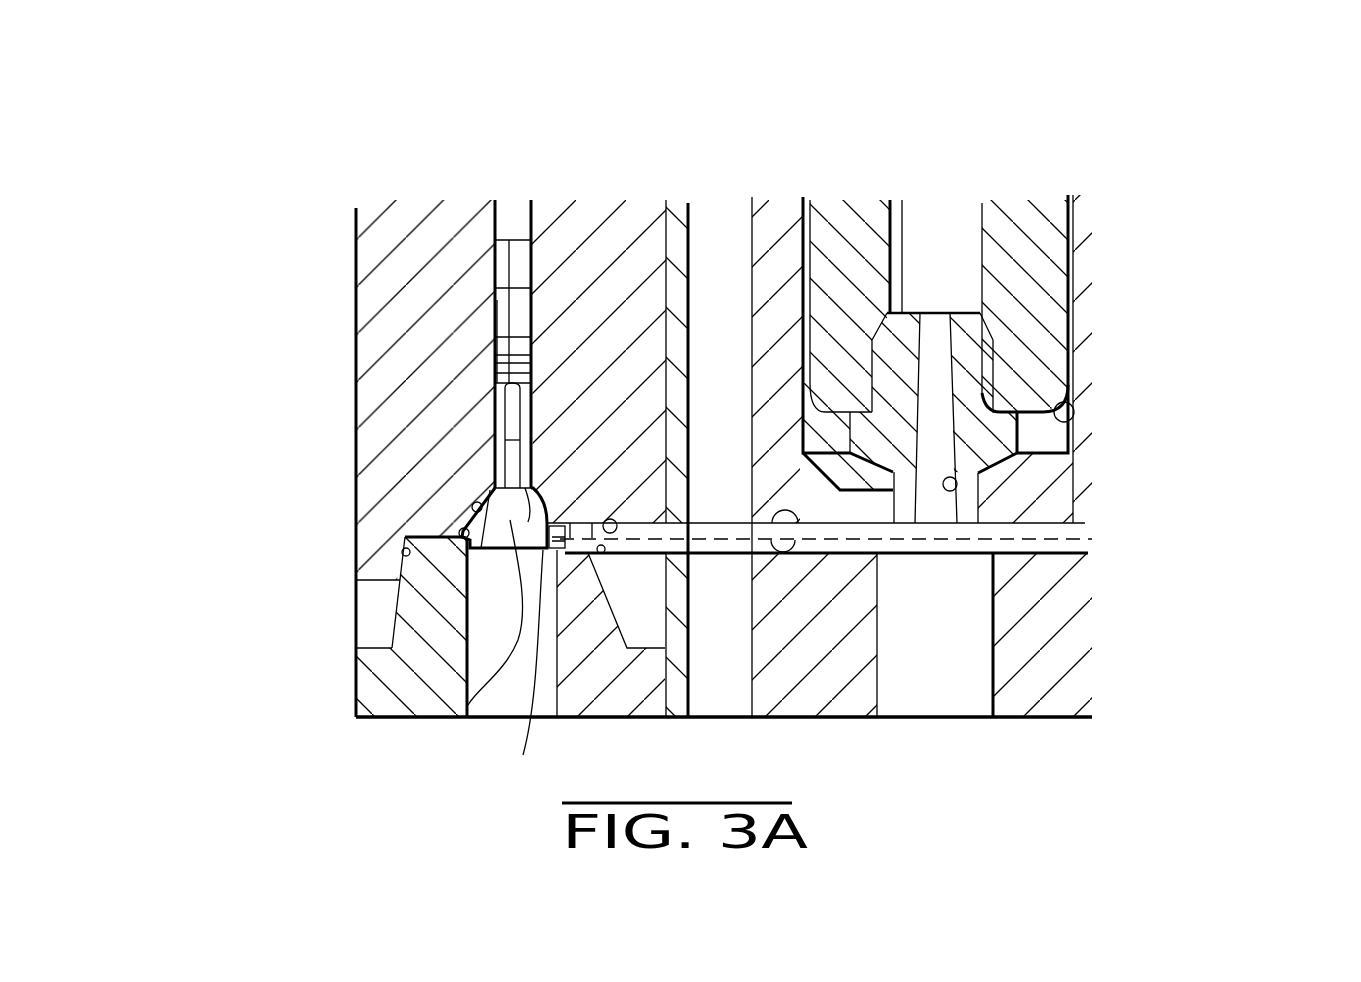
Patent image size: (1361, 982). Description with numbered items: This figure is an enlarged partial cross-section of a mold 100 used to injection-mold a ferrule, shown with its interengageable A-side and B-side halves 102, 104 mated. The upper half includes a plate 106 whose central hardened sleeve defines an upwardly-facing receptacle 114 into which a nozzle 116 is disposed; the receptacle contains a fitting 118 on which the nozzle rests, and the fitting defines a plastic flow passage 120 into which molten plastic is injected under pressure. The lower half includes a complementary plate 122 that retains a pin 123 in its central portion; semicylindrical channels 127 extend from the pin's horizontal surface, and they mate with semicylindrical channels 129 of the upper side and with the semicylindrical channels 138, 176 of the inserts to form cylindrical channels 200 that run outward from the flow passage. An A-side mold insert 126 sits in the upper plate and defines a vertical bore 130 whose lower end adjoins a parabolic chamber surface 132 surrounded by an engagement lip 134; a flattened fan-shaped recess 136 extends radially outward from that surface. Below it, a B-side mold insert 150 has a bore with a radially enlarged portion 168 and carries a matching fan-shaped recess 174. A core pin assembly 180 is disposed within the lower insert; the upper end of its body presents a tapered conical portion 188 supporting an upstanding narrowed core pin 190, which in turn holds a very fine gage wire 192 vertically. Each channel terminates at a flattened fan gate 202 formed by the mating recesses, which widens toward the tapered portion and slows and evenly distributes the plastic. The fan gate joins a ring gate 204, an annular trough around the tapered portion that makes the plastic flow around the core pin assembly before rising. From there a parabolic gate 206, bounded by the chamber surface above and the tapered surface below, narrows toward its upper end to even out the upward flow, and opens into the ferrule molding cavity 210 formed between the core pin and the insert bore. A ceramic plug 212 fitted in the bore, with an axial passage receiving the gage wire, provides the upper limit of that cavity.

The mold 100 is at (1100, 540).
The A-side mold half 102 is at (1124, 335).
The B-side mold half 104 is at (1098, 634).
The plate 106 is at (332, 355).
The receptacle 114 is at (1072, 423).
The nozzle 116 is at (1047, 270).
The fitting 118 is at (967, 327).
The plastic flow passage 120 is at (957, 484).
The plate 122 is at (348, 658).
The pin 123 is at (945, 687).
The A-side mold insert 126 is at (608, 232).
The semicylindrical channel 127 is at (793, 553).
The semicylindrical channel 129 is at (763, 403).
The vertical bore 130 is at (532, 207).
The chamber surface 132 is at (473, 510).
The engagement lip 134 is at (356, 555).
The fan-shaped recess 136 is at (568, 513).
The semicylindrical channel 138 is at (620, 515).
The B-side mold insert 150 is at (442, 602).
The radially enlarged portion 168 is at (463, 528).
The fan-shaped recess 174 is at (557, 553).
The semicylindrical channel 176 is at (607, 553).
The core pin assembly 180 is at (498, 637).
The tapered conical portion 188 is at (468, 705).
The core pin 190 is at (510, 408).
The gage wire 192 is at (512, 262).
The channel 200 is at (840, 547).
The fan gate 202 is at (505, 674).
The ring gate 204 is at (520, 483).
The parabolic gate 206 is at (483, 497).
The ferrule molding cavity 210 is at (500, 440).
The ceramic plug 212 is at (493, 338).